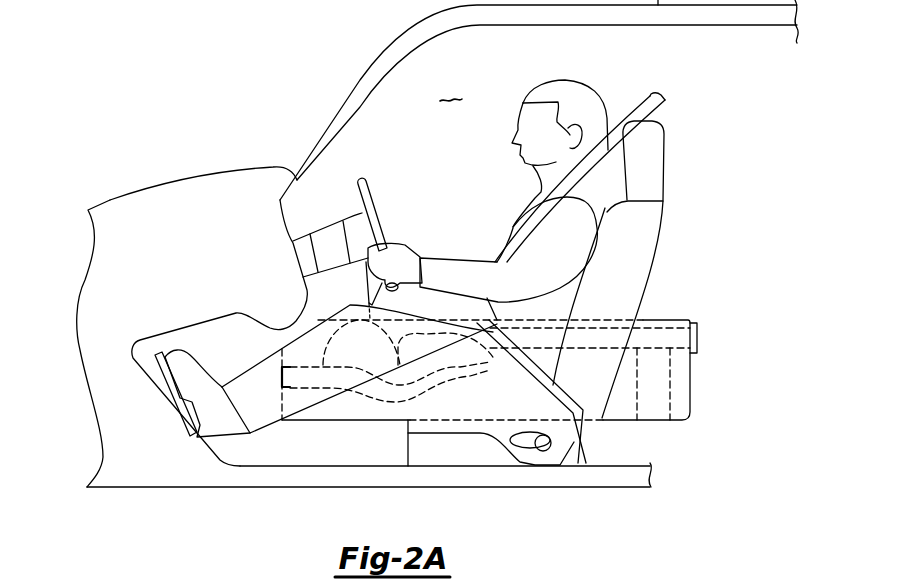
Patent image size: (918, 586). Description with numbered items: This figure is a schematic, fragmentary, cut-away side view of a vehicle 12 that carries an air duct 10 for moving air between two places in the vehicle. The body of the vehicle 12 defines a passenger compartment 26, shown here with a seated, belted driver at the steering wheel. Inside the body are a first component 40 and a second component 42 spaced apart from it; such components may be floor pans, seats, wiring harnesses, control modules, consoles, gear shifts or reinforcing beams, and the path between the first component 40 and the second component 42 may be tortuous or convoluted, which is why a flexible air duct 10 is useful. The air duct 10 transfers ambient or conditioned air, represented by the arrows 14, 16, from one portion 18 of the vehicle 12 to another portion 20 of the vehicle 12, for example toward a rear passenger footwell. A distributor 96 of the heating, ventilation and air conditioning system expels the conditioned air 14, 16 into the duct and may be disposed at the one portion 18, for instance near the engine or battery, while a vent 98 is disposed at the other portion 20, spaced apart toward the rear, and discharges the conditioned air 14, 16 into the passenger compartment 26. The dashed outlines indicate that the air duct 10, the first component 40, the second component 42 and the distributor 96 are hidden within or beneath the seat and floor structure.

The air duct 10 is at (335, 341).
The vehicle 12 is at (180, 137).
The conditioned air 14 is at (698, 335).
The conditioned air 16 is at (698, 341).
The one portion of the vehicle 18 is at (233, 443).
The another portion of the vehicle 20 is at (730, 420).
The passenger compartment 26 is at (451, 90).
The first component 40 is at (417, 342).
The second component 42 is at (670, 402).
The distributor 96 is at (282, 370).
The vent 98 is at (697, 325).